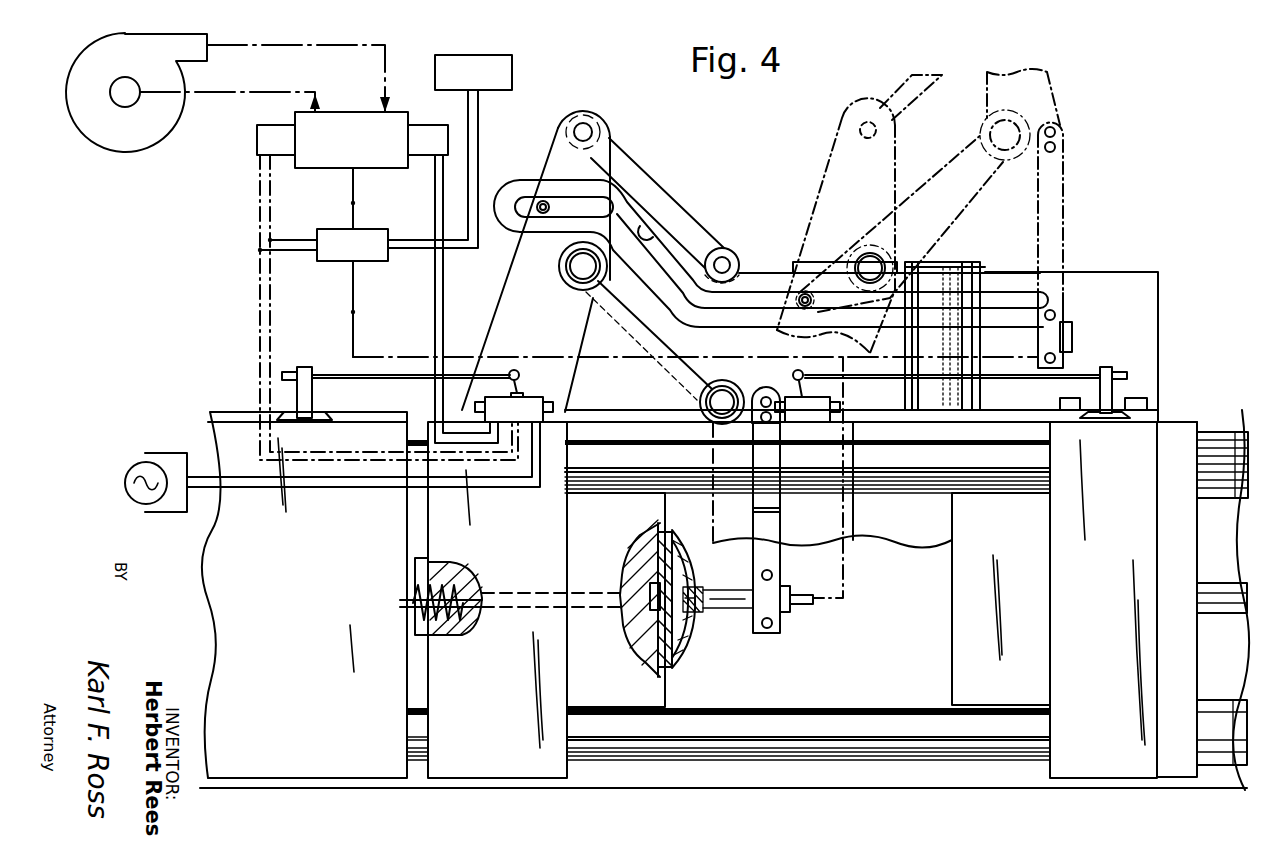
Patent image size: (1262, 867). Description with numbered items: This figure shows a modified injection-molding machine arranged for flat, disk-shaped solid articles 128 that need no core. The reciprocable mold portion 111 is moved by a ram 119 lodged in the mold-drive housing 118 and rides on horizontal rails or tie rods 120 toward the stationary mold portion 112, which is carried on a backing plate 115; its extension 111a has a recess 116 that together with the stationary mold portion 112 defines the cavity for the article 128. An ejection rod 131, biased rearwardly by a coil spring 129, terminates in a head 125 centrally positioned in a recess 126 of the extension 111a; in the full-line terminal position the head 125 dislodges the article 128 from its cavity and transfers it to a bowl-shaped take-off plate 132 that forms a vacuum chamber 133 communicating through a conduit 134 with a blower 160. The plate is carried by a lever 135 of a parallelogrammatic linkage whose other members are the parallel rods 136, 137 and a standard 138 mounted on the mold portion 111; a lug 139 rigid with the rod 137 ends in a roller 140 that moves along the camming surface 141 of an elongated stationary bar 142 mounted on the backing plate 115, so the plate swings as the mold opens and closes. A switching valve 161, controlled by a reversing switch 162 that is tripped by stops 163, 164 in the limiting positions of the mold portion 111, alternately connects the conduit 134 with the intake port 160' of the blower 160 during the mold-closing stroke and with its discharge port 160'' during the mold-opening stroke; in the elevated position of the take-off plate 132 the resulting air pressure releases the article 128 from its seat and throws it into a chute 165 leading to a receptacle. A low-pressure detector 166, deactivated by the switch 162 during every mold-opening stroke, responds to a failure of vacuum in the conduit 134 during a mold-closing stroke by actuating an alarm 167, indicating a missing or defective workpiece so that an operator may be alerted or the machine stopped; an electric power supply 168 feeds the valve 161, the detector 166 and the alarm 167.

The reciprocable mold portion 111 is at (495, 768).
The extension 111a is at (602, 700).
The stationary mold portion 112 is at (995, 678).
The backing plate 115 is at (1120, 767).
The recess 116 is at (640, 657).
The housing 118 is at (328, 768).
The ram 119 is at (407, 561).
The rails or tie rods 120 is at (905, 478).
The head 125 is at (650, 582).
The recess 126 is at (623, 629).
The article 128 is at (682, 660).
The coil spring 129 is at (470, 571).
The ejection rod 131 is at (470, 622).
The take-off plate 132 is at (977, 390).
The vacuum chamber 133 is at (680, 622).
The conduit 134 is at (742, 613).
The lever 135 is at (692, 335).
The rod 136 is at (900, 83).
The rod 137 is at (966, 153).
The standard 138 is at (836, 139).
The lug 139 is at (558, 244).
The roller 140 is at (538, 200).
The camming surface 141 is at (650, 234).
The stationary bar 142 is at (760, 272).
The blower 160 is at (136, 125).
The intake port 160' is at (66, 135).
The discharge port 160'' is at (242, 66).
The switching valve 161 is at (389, 162).
The reversing switch 162 is at (530, 385).
The stop 163 is at (381, 374).
The stop 164 is at (1083, 373).
The chute 165 is at (956, 262).
The low-pressure detector 166 is at (326, 263).
The alarm 167 is at (512, 60).
The electric power supply 168 is at (136, 463).